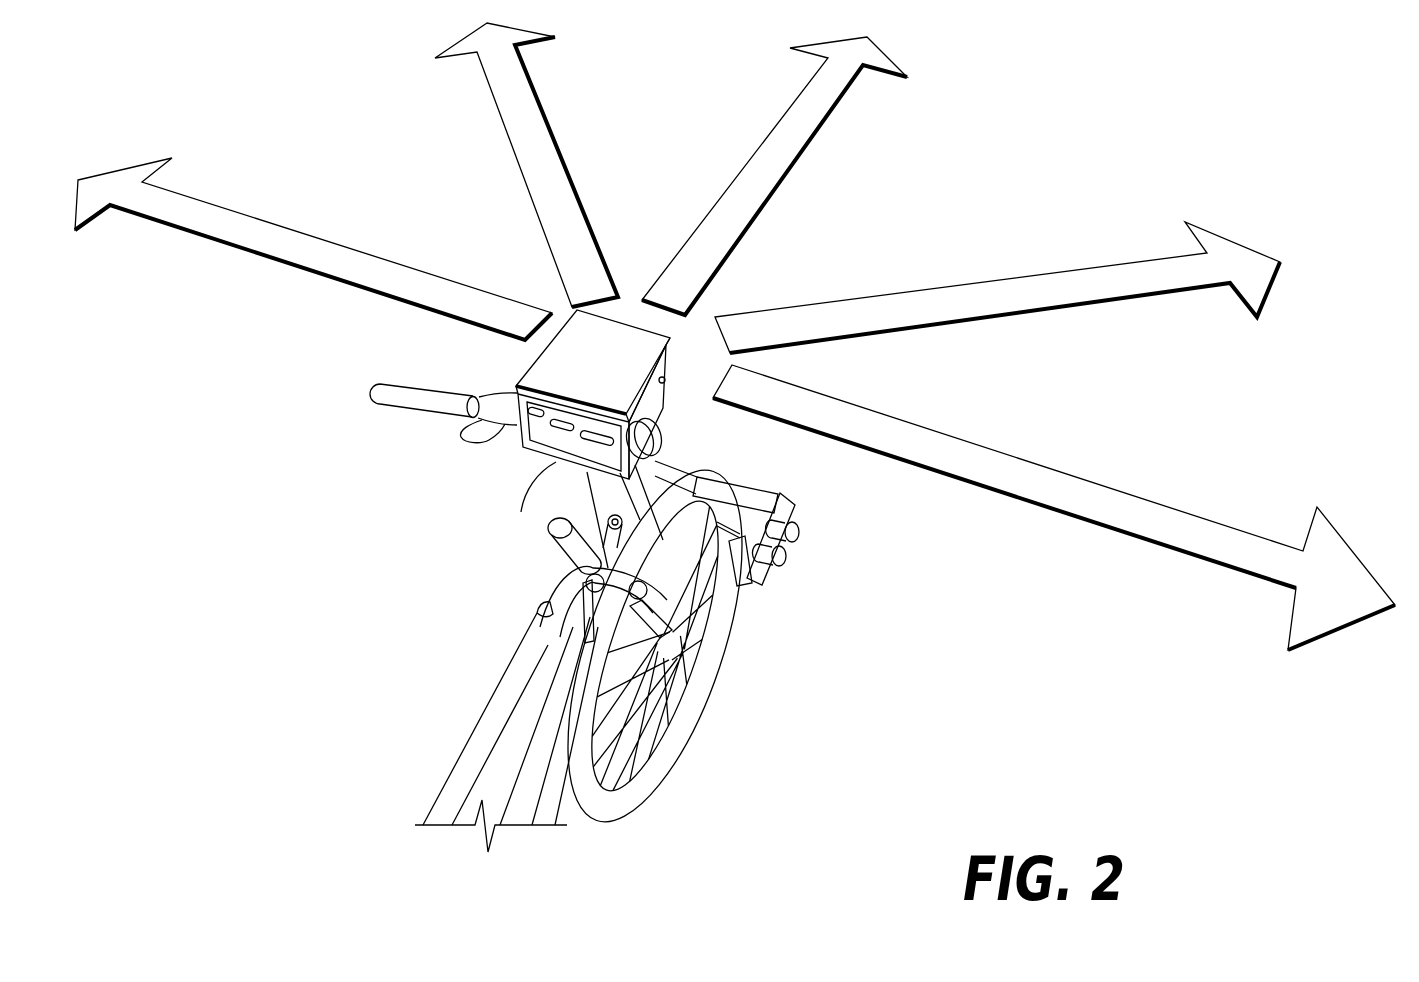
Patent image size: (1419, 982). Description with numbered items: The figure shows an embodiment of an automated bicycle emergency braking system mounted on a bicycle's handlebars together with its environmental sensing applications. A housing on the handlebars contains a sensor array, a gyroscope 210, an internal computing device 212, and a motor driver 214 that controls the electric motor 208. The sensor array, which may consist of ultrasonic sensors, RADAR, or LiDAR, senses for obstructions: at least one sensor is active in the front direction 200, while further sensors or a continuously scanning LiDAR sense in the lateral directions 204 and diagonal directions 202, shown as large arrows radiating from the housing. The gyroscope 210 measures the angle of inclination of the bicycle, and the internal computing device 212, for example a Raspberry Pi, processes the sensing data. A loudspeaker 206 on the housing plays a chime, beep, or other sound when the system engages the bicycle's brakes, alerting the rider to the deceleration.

The front direction 200 is at (707, 252).
The diagonal directions 202 is at (1133, 278).
The lateral directions 204 is at (1030, 480).
The loudspeaker 206 is at (657, 424).
The electric motor 208 is at (733, 561).
The gyroscope 210 is at (545, 426).
The internal computing device 212 is at (567, 439).
The motor driver 214 is at (588, 453).